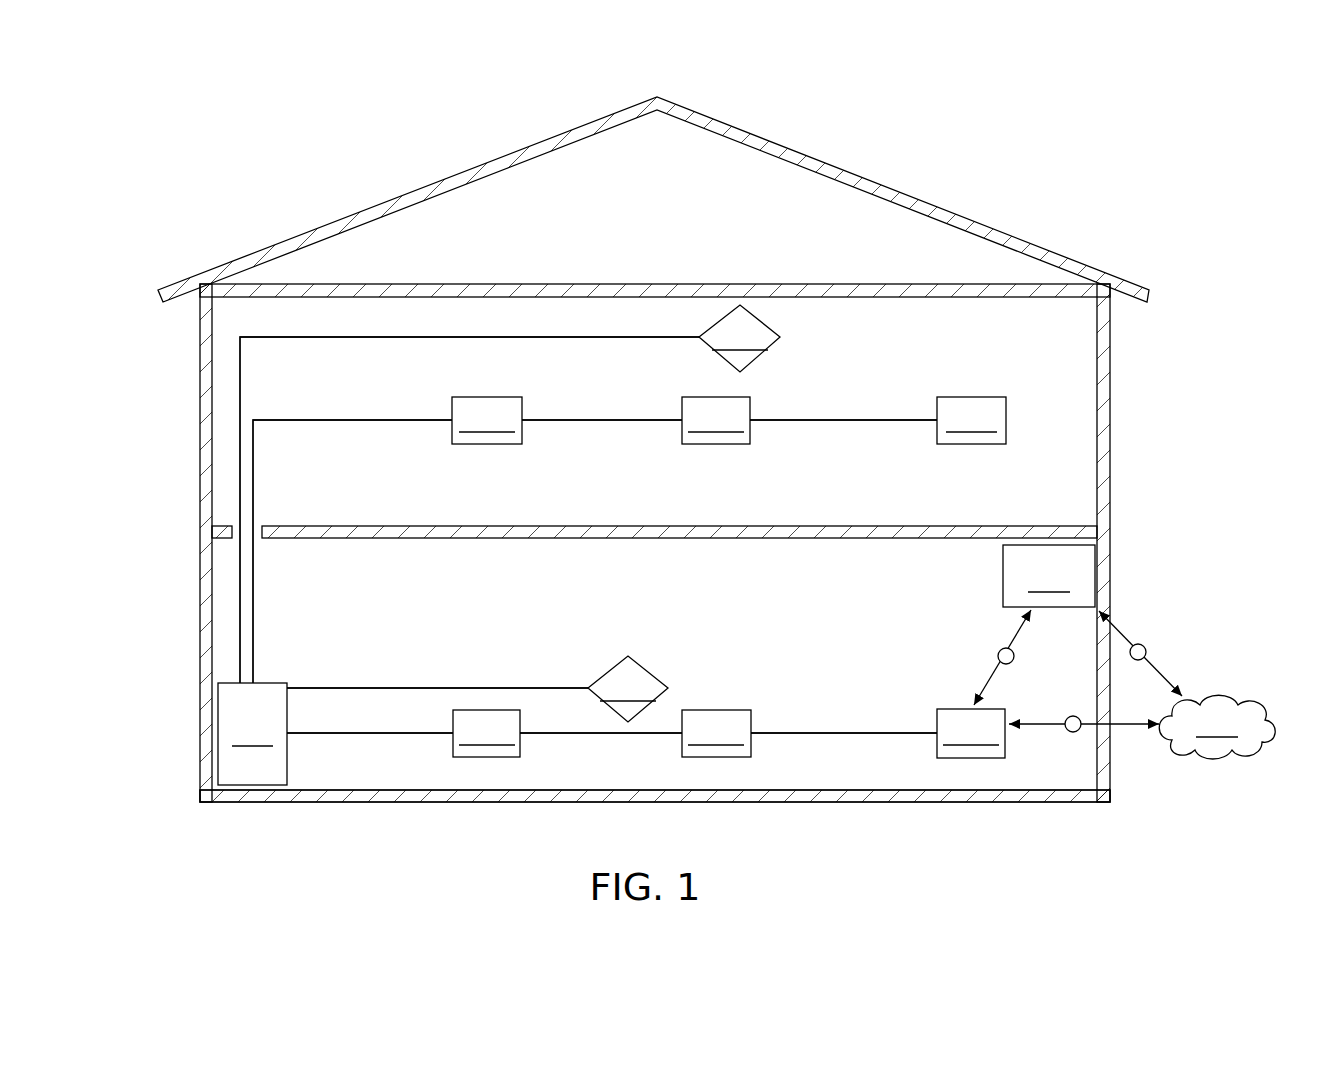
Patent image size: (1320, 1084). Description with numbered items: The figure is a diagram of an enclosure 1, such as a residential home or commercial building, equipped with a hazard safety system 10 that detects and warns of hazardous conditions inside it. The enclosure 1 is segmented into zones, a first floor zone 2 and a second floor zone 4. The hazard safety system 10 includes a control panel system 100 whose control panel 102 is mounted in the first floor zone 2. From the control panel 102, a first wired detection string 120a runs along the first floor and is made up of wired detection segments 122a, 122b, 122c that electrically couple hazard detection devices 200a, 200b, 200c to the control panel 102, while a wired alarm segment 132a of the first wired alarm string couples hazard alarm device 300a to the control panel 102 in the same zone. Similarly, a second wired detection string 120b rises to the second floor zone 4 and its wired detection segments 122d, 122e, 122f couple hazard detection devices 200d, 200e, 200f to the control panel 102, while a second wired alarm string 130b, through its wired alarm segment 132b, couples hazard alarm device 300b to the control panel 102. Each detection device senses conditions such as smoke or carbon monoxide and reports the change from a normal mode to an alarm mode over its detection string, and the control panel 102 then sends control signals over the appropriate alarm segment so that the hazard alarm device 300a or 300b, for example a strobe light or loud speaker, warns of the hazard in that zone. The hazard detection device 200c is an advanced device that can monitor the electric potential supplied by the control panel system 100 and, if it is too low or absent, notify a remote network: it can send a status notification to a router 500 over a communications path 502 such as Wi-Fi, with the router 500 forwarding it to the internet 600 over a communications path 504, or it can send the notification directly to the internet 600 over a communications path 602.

The enclosure 1 is at (196, 806).
The first floor zone 2 is at (1057, 780).
The second floor zone 4 is at (1073, 507).
The hazard safety system 10 is at (655, 849).
The control panel system 100 is at (295, 704).
The control panel 102 is at (291, 681).
The first wired detection string 120a is at (1010, 733).
The second wired detection string 120b is at (343, 473).
The wired detection segment 122a is at (342, 733).
The wired detection segment 122b is at (597, 733).
The wired detection segment 122c is at (838, 733).
The wired detection segment 122d is at (325, 421).
The wired detection segment 122e is at (578, 421).
The wired detection segment 122f is at (817, 422).
The second wired alarm string 130b is at (469, 510).
The wired alarm segment 132a is at (450, 688).
The wired alarm segment 132b is at (297, 338).
The hazard detection device 200a is at (486, 733).
The hazard detection device 200b is at (716, 733).
The advanced hazard detection device 200c is at (971, 733).
The hazard detection device 200d is at (487, 420).
The hazard detection device 200e is at (716, 420).
The hazard detection device 200f is at (971, 420).
The hazard alarm device 300a is at (628, 689).
The hazard alarm device 300b is at (739, 338).
The router 500 is at (1049, 576).
The communications path 502 is at (998, 656).
The communications path 504 is at (1146, 650).
The internet 600 is at (1217, 727).
The communications path 602 is at (1073, 716).